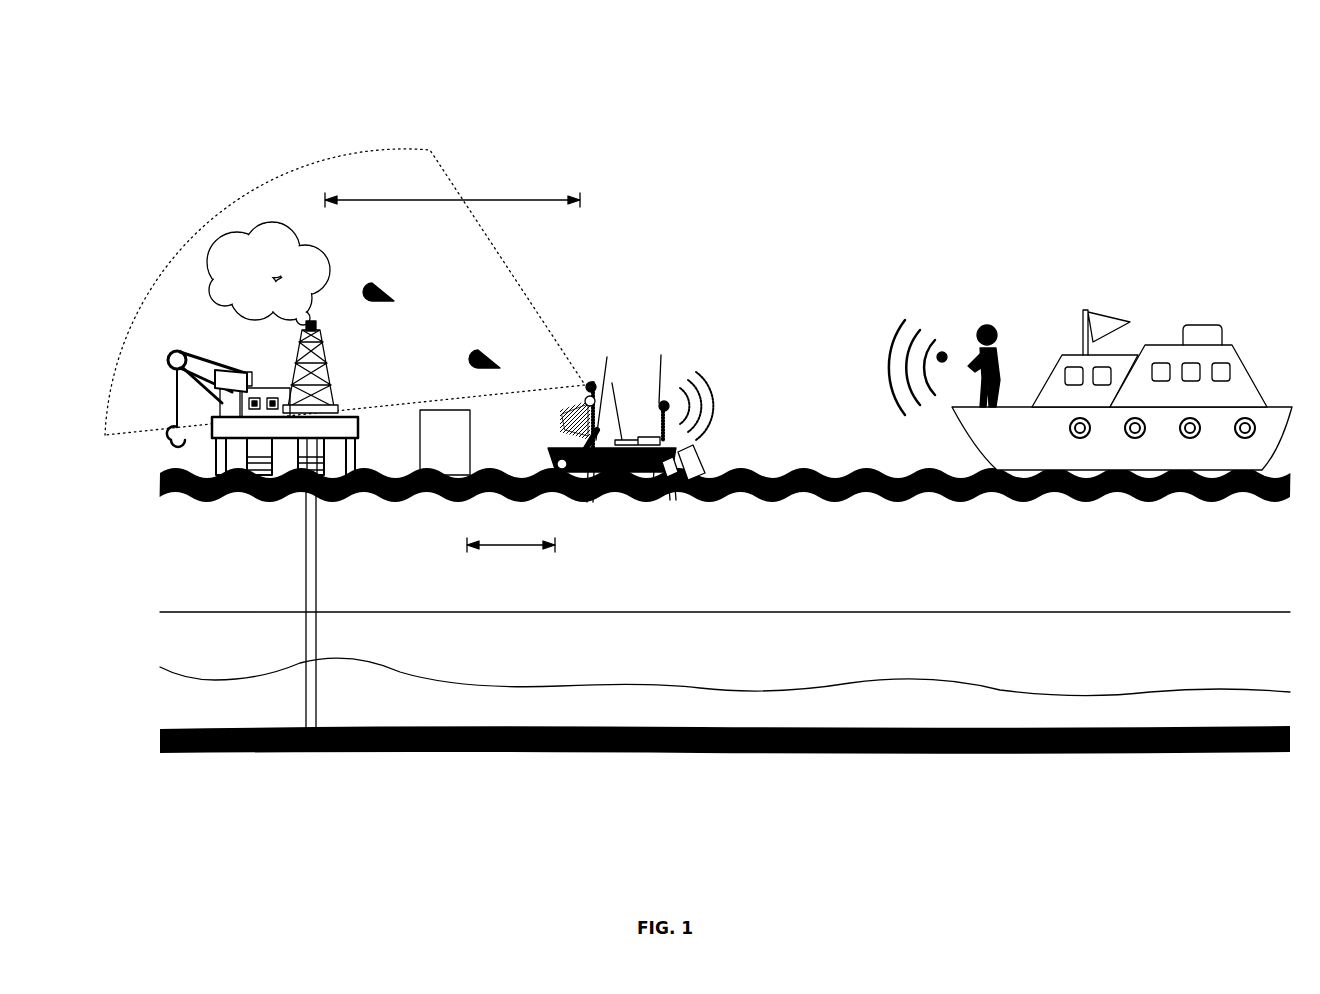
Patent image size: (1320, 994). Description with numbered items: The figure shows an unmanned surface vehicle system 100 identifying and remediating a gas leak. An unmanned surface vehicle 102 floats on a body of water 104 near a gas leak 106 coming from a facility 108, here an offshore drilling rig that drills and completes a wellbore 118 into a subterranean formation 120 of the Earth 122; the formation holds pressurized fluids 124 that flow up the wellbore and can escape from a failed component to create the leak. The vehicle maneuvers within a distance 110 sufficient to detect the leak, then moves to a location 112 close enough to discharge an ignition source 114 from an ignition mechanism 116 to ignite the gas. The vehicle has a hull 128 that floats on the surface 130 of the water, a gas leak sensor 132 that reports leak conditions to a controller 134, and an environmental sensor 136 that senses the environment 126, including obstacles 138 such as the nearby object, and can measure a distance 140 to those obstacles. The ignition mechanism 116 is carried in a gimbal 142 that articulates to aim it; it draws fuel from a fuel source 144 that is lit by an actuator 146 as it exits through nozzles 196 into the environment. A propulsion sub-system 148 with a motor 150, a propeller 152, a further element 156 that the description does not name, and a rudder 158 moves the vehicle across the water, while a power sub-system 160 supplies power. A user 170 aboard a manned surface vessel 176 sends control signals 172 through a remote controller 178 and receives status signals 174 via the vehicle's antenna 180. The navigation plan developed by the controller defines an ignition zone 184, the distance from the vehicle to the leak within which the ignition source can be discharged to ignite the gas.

The unmanned surface vehicle system 100 is at (1228, 36).
The unmanned surface vehicle 102 is at (618, 438).
The body of water 104 is at (869, 463).
The gas leak 106 is at (212, 232).
The facility 108 is at (213, 332).
The distance 110 is at (538, 200).
The location 112 is at (540, 462).
The ignition source 114 is at (392, 293).
The ignition mechanism 116 is at (543, 424).
The wellbore 118 is at (318, 580).
The subterranean formation 120 is at (725, 685).
The Earth 122 is at (152, 637).
The fluids 124 is at (148, 740).
The environment 126 is at (345, 292).
The hull 128 is at (592, 474).
The surface 130 is at (799, 472).
The gas leak sensor 132 is at (587, 382).
The controller 134 is at (662, 360).
The environmental sensor 136 is at (588, 392).
The obstacles 138 is at (420, 441).
The distance 140 is at (509, 550).
The gimbal 142 is at (576, 447).
The fuel source 144 is at (608, 362).
The actuator 146 is at (574, 420).
The propulsion sub-system 148 is at (714, 452).
The motor 150 is at (666, 490).
The propeller 152 is at (677, 492).
The cable 156 is at (656, 480).
The rudder 158 is at (694, 485).
The power sub-system 160 is at (612, 384).
The user 170 is at (998, 325).
The control signals 172 is at (885, 346).
The status signals 174 is at (722, 388).
The manned surface vessel 176 is at (1172, 298).
The remote controller 178 is at (945, 352).
The antenna 180 is at (668, 426).
The ignition zone 184 is at (630, 272).
The nozzles 196 is at (560, 395).